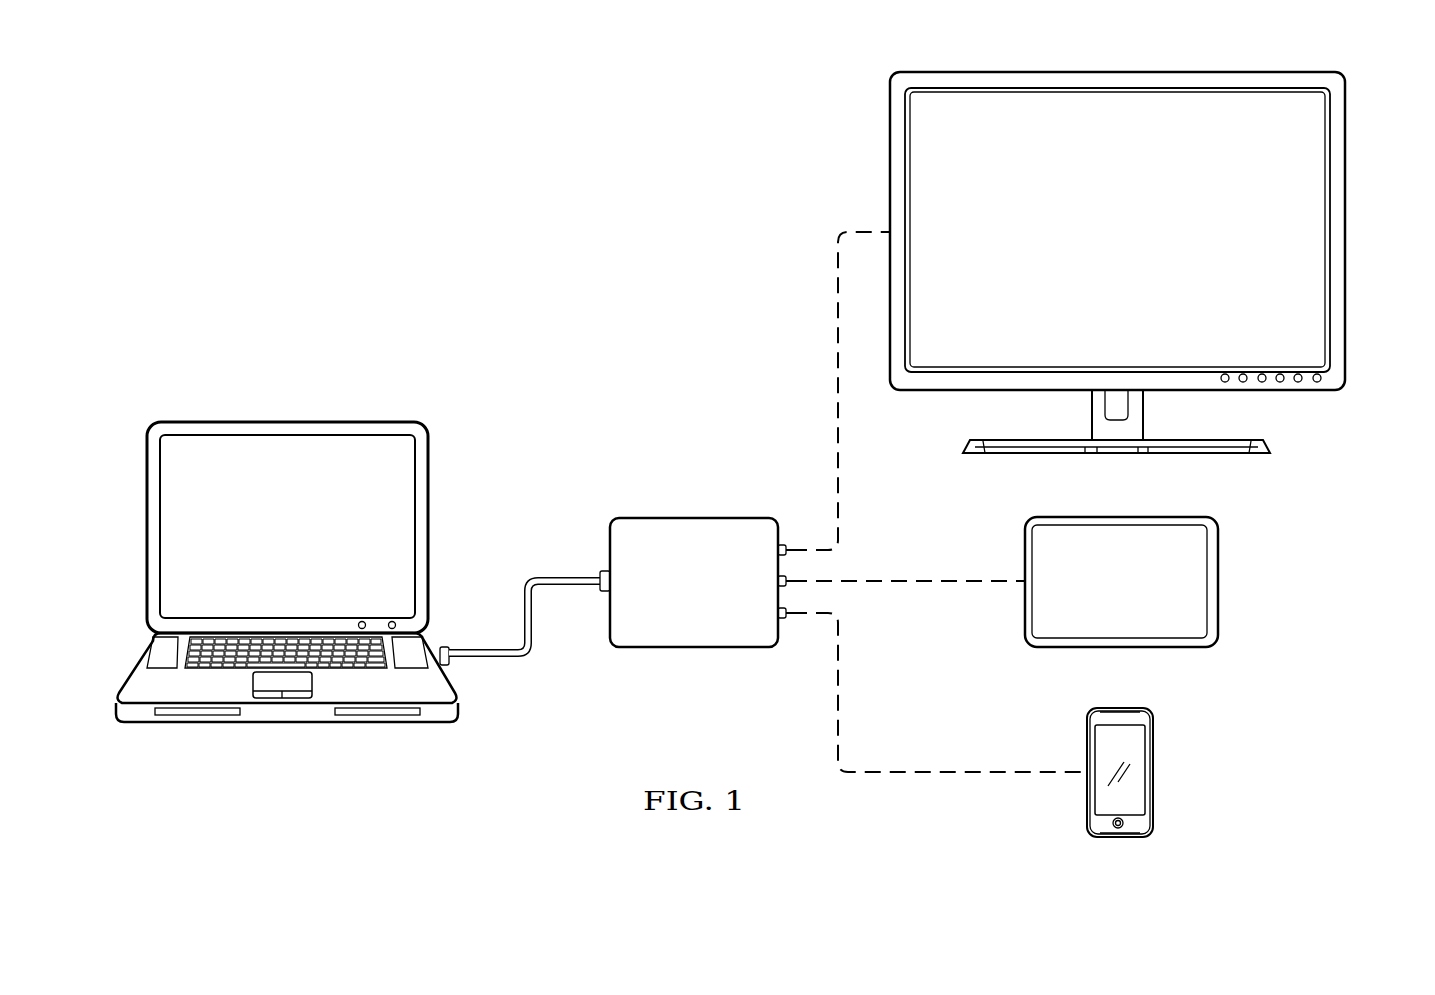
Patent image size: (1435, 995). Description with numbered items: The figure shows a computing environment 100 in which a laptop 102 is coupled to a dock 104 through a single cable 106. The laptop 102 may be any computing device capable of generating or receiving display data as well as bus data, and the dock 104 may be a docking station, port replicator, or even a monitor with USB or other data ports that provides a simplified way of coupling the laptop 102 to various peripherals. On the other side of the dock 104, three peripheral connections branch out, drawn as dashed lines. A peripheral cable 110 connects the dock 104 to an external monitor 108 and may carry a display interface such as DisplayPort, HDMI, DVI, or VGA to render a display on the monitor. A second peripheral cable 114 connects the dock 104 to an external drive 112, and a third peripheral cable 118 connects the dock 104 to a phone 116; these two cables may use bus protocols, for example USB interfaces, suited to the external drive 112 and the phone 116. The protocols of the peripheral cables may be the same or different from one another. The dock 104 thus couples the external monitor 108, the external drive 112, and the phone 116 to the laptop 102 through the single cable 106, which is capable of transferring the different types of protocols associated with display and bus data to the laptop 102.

The environment 100 is at (492, 140).
The laptop 102 is at (287, 420).
The dock 104 is at (695, 517).
The cable 106 is at (573, 575).
The external monitor 108 is at (1346, 233).
The peripheral cable 110 is at (837, 367).
The external drive 112 is at (1219, 592).
The peripheral cable 114 is at (918, 590).
The phone 116 is at (1154, 783).
The peripheral cable 118 is at (978, 773).